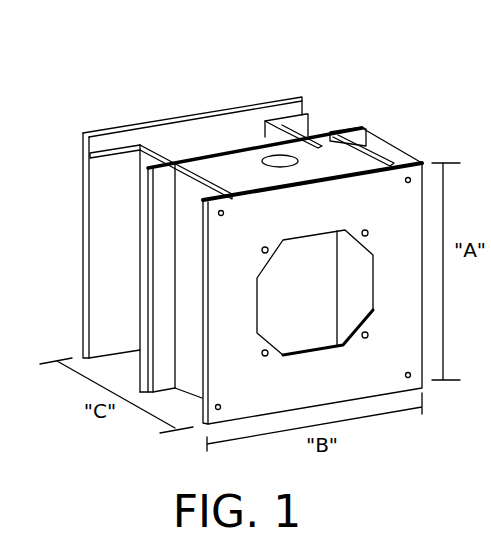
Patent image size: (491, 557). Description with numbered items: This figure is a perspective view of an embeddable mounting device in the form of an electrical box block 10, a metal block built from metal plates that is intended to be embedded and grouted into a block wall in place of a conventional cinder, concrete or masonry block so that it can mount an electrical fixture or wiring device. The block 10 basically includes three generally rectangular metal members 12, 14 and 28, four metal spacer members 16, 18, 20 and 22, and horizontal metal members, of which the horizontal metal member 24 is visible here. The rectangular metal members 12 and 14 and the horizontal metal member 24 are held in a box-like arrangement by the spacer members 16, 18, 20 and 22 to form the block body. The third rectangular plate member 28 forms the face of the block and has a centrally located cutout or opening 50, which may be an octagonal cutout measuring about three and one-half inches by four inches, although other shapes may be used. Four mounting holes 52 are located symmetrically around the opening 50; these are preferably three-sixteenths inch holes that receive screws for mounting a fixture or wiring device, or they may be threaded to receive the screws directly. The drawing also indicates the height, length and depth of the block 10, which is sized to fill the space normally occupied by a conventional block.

The electrical box block 10 is at (340, 66).
The rectangular metal member 12 is at (112, 142).
The rectangular metal member 14 is at (190, 162).
The metal spacer member 16 is at (105, 205).
The metal spacer member 18 is at (302, 127).
The metal spacer member 20 is at (163, 256).
The metal spacer member 22 is at (362, 140).
The horizontal metal member 24 is at (232, 172).
The third rectangular plate member 28 is at (296, 208).
The opening 50 is at (317, 349).
The mounting holes 52 is at (265, 250).